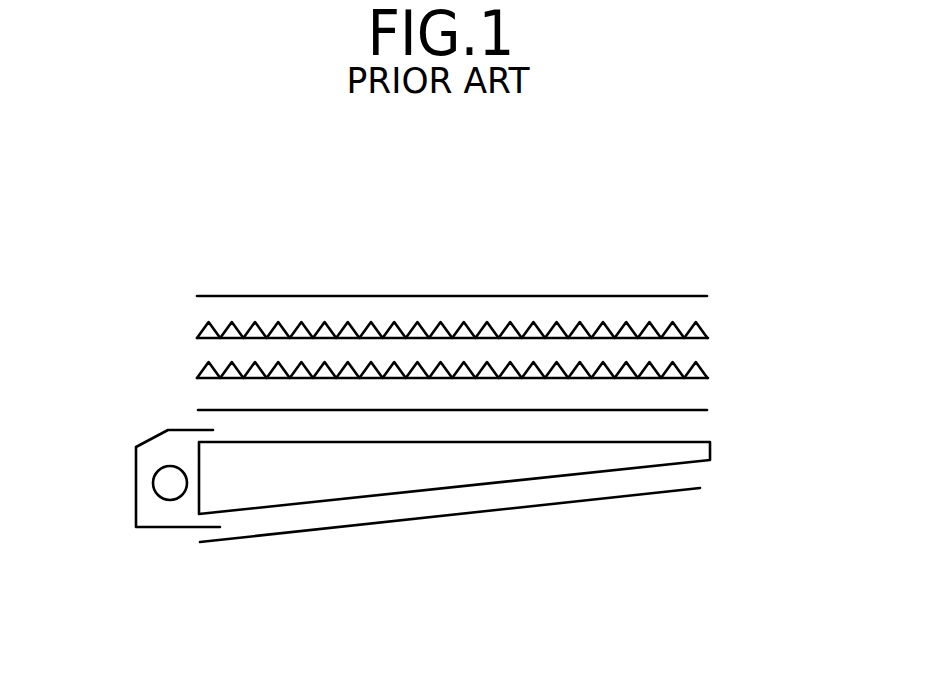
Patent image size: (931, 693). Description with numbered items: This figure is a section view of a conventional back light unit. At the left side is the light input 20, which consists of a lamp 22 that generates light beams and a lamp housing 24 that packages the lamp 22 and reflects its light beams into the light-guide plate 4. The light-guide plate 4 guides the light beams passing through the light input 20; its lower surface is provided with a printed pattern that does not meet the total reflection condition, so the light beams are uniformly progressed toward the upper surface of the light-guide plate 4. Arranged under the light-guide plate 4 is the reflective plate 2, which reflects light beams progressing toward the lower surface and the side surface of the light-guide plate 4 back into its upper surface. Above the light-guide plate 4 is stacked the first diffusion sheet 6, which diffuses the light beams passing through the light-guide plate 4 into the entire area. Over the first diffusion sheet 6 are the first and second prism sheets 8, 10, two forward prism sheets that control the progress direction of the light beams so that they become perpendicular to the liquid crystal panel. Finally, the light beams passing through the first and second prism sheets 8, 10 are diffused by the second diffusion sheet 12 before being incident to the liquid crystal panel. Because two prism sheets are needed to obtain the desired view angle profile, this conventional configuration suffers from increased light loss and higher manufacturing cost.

The reflective plate 2 is at (700, 488).
The light-guide plate 4 is at (690, 455).
The first diffusion sheet 6 is at (707, 410).
The first prism sheet 8 is at (708, 378).
The second prism sheet 10 is at (708, 338).
The second diffusion sheet 12 is at (707, 296).
The light input 20 is at (132, 552).
The lamp 22 is at (167, 487).
The lamp housing 24 is at (152, 437).